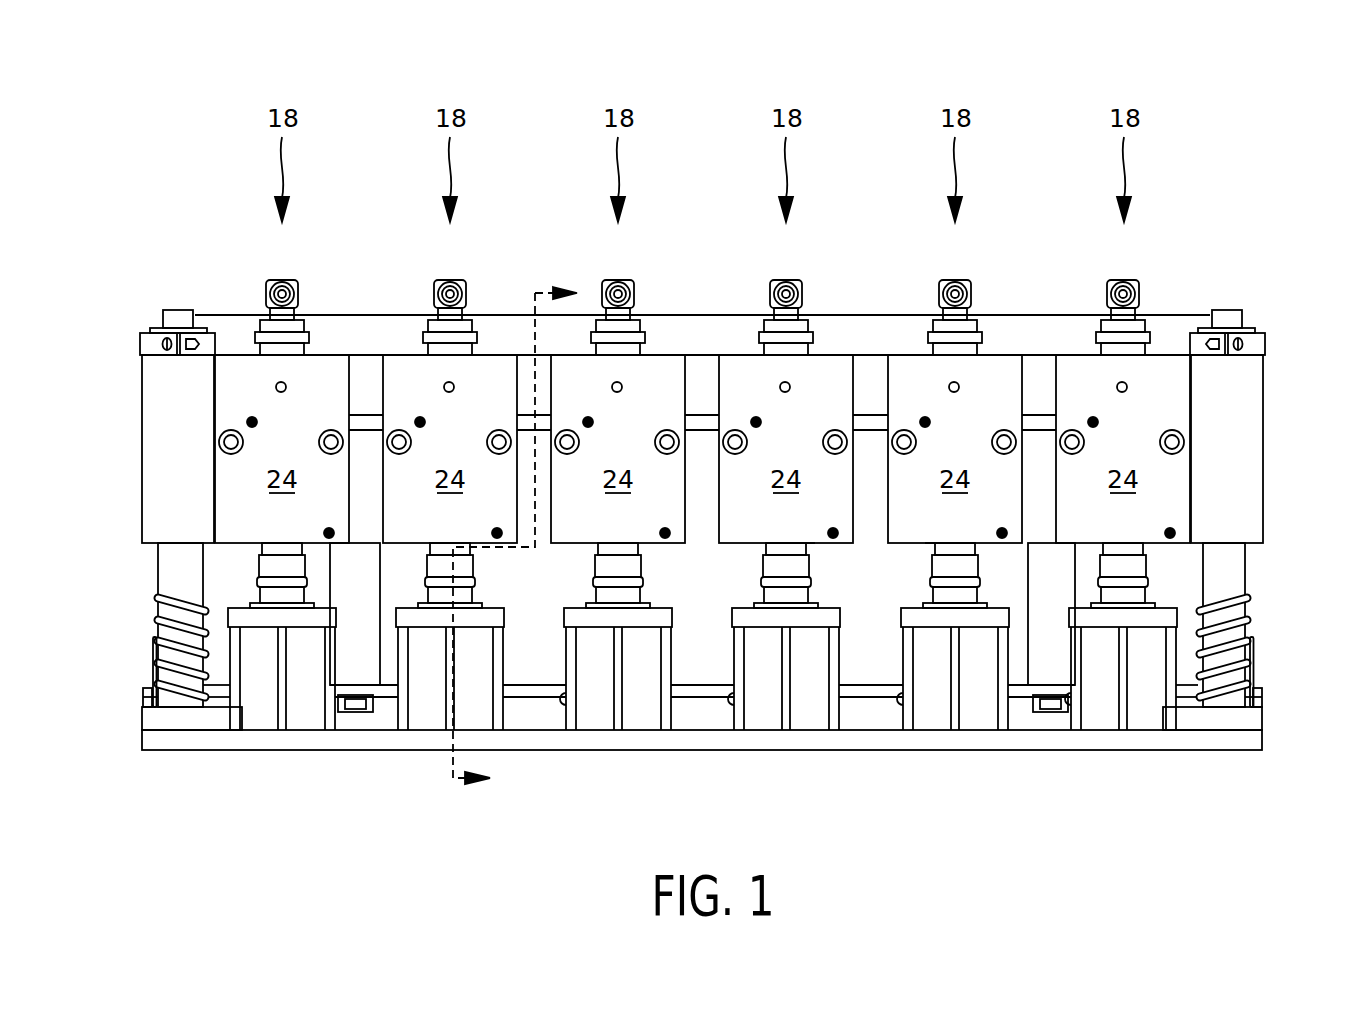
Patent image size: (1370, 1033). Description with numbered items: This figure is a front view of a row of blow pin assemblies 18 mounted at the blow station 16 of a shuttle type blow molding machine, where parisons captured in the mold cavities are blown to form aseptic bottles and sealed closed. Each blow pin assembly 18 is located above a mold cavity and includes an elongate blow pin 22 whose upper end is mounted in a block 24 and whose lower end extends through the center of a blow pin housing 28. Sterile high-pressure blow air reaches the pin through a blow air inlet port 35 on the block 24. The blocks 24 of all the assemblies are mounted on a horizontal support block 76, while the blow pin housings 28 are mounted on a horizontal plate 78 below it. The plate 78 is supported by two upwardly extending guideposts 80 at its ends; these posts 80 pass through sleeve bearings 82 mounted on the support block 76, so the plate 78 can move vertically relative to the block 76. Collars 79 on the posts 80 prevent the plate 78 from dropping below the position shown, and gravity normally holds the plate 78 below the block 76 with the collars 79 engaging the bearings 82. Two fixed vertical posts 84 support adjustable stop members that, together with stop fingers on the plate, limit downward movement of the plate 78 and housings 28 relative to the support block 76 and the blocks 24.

The blow station 16 is at (704, 467).
The blow pin assembly 18 is at (704, 163).
The blow pin 22 is at (810, 545).
The block 24 is at (702, 449).
The blow pin housing 28 is at (427, 687).
The blow air inlet port 35 is at (433, 292).
The horizontal support block 76 is at (1032, 316).
The horizontal plate 78 is at (1250, 742).
The collar 79 is at (142, 343).
The guidepost 80 is at (178, 570).
The sleeve bearing 82 is at (142, 425).
The fixed vertical post 84 is at (368, 587).